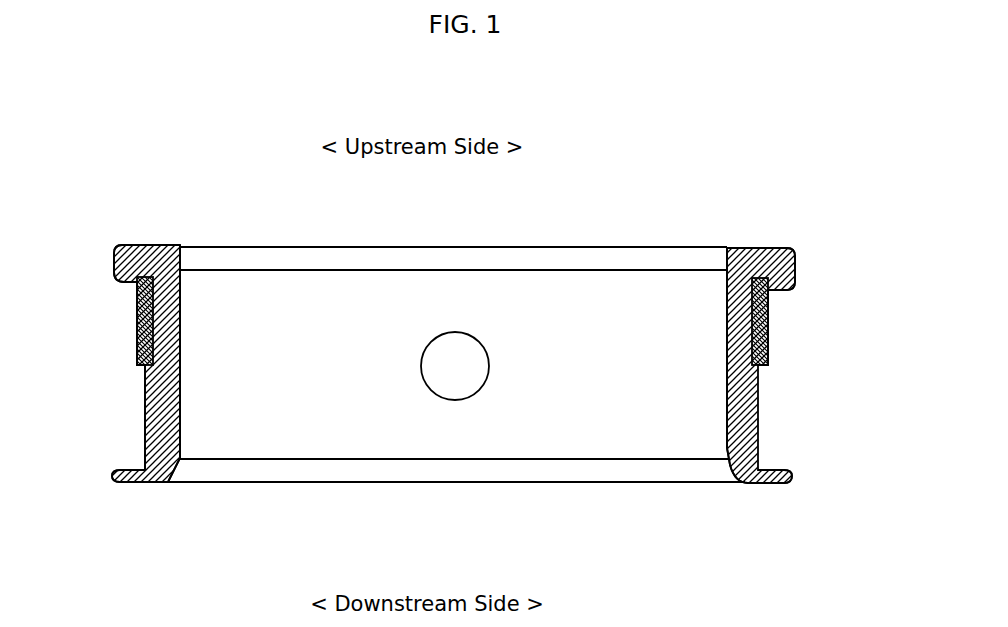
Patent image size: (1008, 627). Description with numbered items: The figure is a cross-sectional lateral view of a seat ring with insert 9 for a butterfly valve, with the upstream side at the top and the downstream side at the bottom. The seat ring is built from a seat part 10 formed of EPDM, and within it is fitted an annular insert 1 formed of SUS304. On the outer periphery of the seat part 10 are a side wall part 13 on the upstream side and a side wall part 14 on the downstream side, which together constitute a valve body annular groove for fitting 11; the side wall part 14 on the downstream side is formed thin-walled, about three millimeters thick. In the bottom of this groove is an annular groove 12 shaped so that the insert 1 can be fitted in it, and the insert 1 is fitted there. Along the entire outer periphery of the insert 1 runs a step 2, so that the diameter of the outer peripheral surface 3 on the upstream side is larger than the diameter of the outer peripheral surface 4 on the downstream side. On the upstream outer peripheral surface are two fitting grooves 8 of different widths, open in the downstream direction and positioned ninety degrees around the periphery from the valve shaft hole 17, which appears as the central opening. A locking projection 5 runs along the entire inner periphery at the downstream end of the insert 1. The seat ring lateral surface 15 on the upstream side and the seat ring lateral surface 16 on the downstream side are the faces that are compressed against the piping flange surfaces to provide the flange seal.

The insert 1 is at (150, 432).
The step 2 is at (147, 366).
The outer peripheral surface on the upstream side 3 is at (137, 295).
The outer peripheral surface on the downstream side 4 is at (147, 404).
The locking projection 5 is at (168, 458).
The fitting grooves 8 is at (137, 335).
The seat ring with insert 9 is at (727, 313).
The seat part 10 is at (180, 350).
The valve body annular groove for fitting 11 is at (760, 458).
The annular groove 12 is at (758, 402).
The side wall part on the upstream side 13 is at (790, 252).
The side wall part on the downstream side 14 is at (781, 486).
The seat ring lateral surface on the upstream side 15 is at (772, 248).
The seat ring lateral surface on the downstream side 16 is at (774, 486).
The valve shaft hole 17 is at (478, 392).